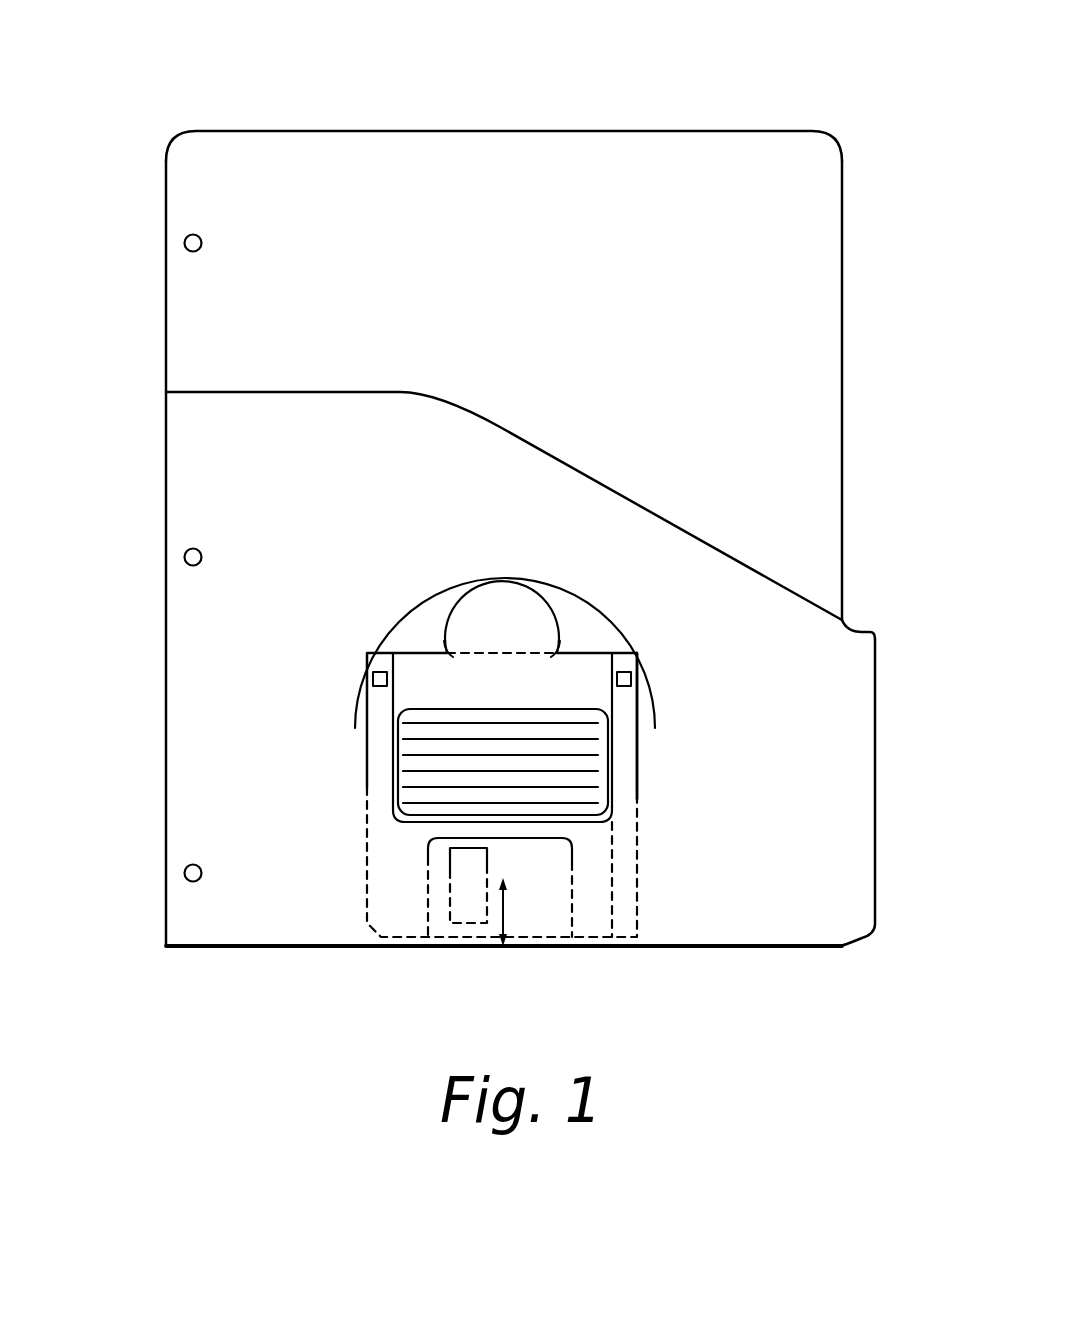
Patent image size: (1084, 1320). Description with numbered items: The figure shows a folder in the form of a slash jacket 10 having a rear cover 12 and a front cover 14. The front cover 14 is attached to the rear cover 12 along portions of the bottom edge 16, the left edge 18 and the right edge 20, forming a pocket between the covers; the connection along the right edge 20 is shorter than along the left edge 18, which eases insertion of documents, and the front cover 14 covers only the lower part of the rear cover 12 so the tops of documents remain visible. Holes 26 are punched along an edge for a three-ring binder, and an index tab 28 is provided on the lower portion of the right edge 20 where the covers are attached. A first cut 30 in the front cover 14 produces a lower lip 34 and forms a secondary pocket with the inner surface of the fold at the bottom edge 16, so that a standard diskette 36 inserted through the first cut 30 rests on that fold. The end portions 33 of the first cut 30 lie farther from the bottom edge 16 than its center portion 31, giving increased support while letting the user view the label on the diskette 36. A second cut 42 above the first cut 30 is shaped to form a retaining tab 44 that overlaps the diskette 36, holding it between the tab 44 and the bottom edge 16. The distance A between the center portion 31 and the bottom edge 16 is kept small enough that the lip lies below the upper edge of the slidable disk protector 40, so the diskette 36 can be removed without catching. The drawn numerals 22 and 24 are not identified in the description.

The slash jacket 10 is at (455, 92).
The rear cover 12 is at (829, 153).
The front cover 14 is at (848, 679).
The bottom edge 16 is at (268, 947).
The left edge 18 is at (165, 668).
The right edge 20 is at (843, 451).
The top edge of front panel 22 is at (250, 392).
The top edge of back panel 24 is at (266, 130).
The holes 26 is at (186, 242).
The index tab 28 is at (868, 759).
The first cut 30 is at (384, 823).
The center portion of the first cut 31 is at (498, 887).
The end portions of the first cut 33 is at (652, 752).
The lower lip 34 is at (535, 897).
The diskette 36 is at (625, 722).
The slidable disk protector 40 is at (540, 831).
The second cut 42 is at (465, 662).
The retaining tab 44 is at (515, 665).